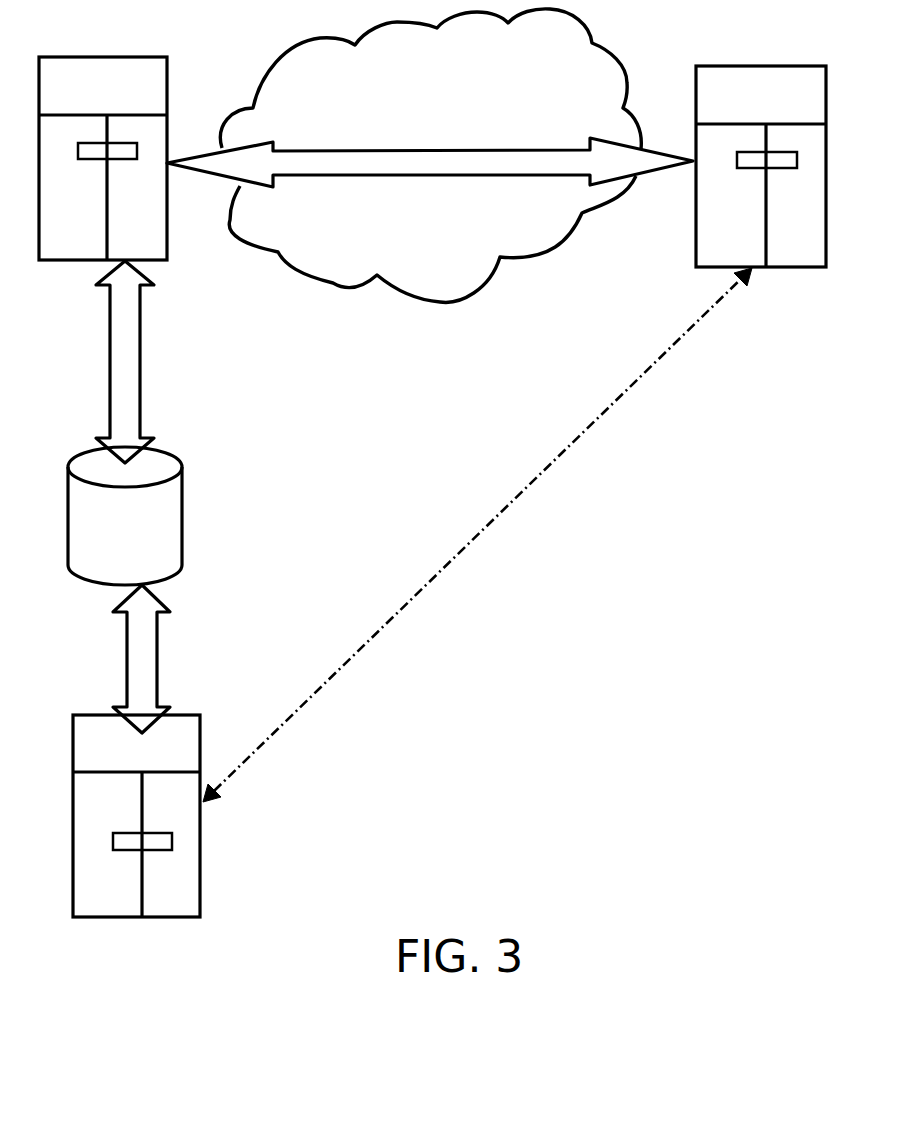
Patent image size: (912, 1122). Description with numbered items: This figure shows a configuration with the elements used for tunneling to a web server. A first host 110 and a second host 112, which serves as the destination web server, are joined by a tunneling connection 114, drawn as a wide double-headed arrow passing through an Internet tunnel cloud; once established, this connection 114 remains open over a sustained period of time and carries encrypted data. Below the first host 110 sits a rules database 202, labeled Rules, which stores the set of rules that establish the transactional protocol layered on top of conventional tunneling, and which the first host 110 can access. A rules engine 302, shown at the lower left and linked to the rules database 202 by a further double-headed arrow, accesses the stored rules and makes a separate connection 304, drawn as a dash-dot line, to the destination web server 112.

The host 110 is at (95, 54).
The host 112 is at (768, 65).
The connection 114 is at (548, 176).
The rules database 202 is at (168, 450).
The rules engine 302 is at (72, 837).
The connection 304 is at (515, 502).